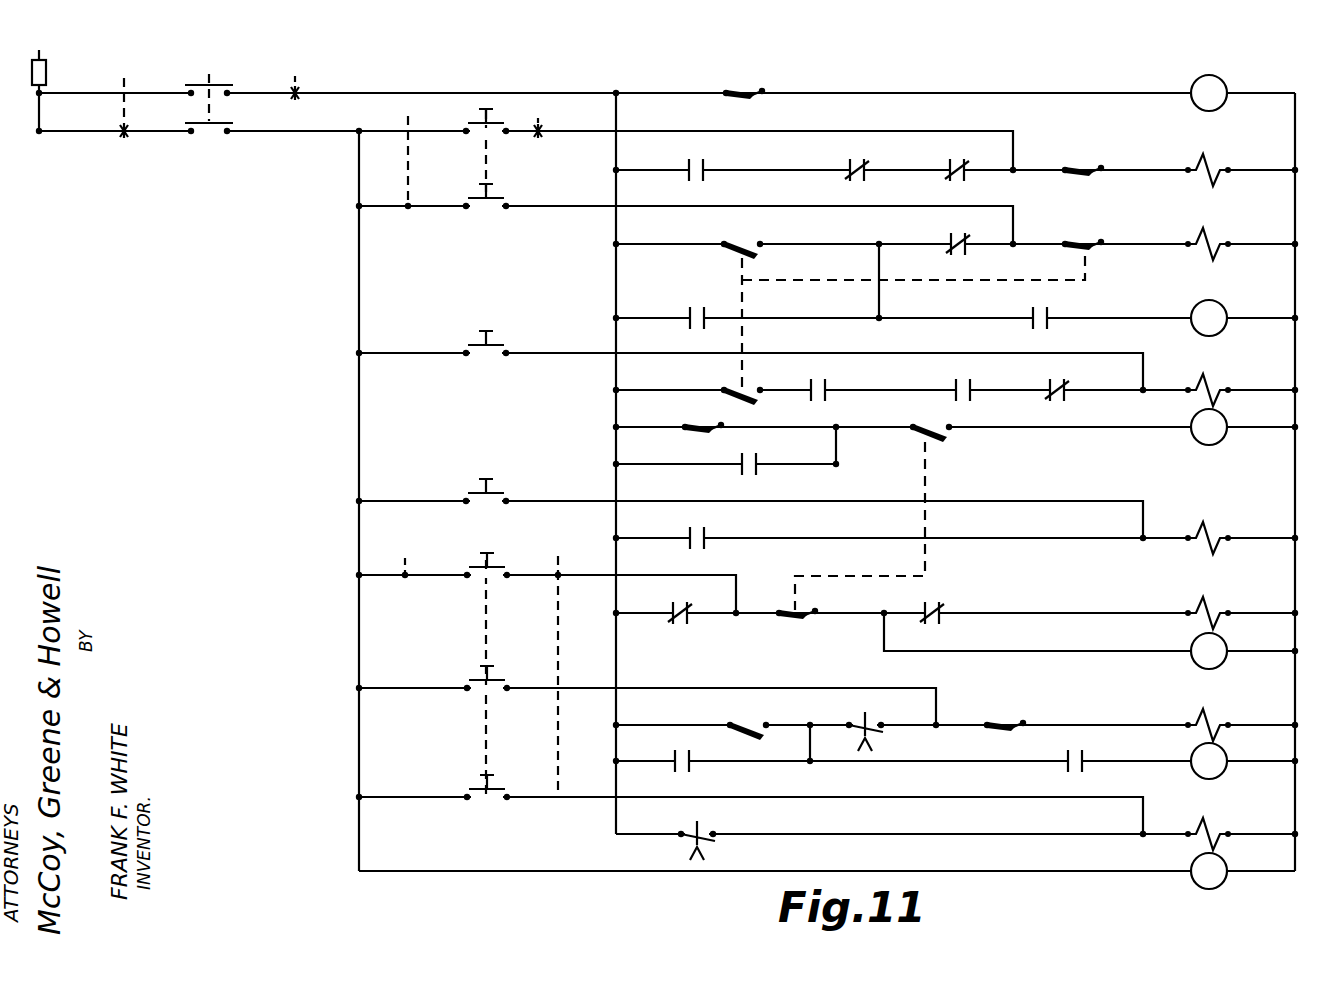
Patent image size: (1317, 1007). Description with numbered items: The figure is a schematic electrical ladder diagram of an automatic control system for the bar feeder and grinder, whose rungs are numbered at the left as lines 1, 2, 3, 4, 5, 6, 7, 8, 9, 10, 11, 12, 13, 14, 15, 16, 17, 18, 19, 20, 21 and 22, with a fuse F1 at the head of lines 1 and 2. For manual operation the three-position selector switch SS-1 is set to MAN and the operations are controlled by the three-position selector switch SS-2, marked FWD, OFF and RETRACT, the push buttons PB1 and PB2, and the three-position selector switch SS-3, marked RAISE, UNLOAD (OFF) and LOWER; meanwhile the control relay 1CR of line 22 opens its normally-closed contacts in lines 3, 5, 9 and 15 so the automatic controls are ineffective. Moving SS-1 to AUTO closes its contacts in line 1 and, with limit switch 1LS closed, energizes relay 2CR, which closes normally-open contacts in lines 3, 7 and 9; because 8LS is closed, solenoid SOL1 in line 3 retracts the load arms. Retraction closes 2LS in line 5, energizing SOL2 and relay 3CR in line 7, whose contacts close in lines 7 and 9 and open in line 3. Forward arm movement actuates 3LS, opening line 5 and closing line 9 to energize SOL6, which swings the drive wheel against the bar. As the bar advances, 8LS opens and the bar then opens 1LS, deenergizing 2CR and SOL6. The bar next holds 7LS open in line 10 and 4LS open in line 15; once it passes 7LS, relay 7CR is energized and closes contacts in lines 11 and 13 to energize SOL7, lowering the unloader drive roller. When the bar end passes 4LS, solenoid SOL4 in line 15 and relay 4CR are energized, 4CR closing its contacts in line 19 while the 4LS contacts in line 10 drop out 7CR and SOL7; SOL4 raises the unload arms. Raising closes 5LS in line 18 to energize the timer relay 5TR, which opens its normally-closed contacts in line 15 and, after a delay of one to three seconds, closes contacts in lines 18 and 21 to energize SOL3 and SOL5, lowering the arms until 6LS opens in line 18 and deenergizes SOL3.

The line 1 is at (651, 107).
The line 2 is at (510, 146).
The line 3 is at (816, 170).
The line 4 is at (673, 220).
The line 5 is at (816, 244).
The line 6 is at (347, 280).
The line 7 is at (816, 286).
The line 8 is at (738, 367).
The line 9 is at (816, 390).
The line 10 is at (814, 427).
The line 11 is at (584, 450).
The line 12 is at (736, 515).
The line 13 is at (814, 538).
The line 14 is at (533, 589).
The line 15 is at (814, 613).
The line 16 is at (814, 637).
The line 17 is at (633, 702).
The line 18 is at (814, 725).
The line 19 is at (814, 748).
The line 20 is at (736, 811).
The line 21 is at (814, 834).
The line 22 is at (812, 871).
The fuse F1 is at (50, 92).
The MAN position MAN is at (118, 95).
The three-position selector switch SS-1 is at (209, 88).
The AUTO position AUTO is at (294, 76).
The forward selector position FWD is at (404, 149).
The off selector position OFF is at (486, 445).
The retract selector position RETRACT is at (555, 118).
The three-position selector switch SS-2 is at (561, 123).
The push button PB1 is at (485, 316).
The push button PB2 is at (483, 464).
The raise selector position RAISE is at (390, 553).
The unload selector position UNLOAD is at (478, 528).
The lower selector position LOWER is at (555, 666).
The three-position selector switch SS-3 is at (578, 563).
The limit switch 1LS is at (744, 83).
The limit switch 2LS is at (899, 305).
The limit switch 3LS is at (902, 312).
The limit switch 4LS is at (864, 510).
The limit switch 5LS is at (747, 720).
The limit switch 6LS is at (1005, 716).
The limit switch 7LS is at (702, 417).
The limit switch 8LS is at (1083, 160).
The control relay 1CR is at (944, 512).
The control relay 2CR is at (953, 238).
The control relay 3CR is at (951, 268).
The control relay 4CR is at (1140, 702).
The control relay 7CR is at (953, 479).
The timer relay 5TR is at (945, 721).
The solenoid SOL1 is at (1232, 169).
The solenoid SOL2 is at (1232, 244).
The solenoid SOL3 is at (1232, 724).
The solenoid SOL4 is at (1232, 612).
The solenoid SOL5 is at (1232, 833).
The solenoid SOL6 is at (1232, 389).
The solenoid SOL7 is at (1233, 538).